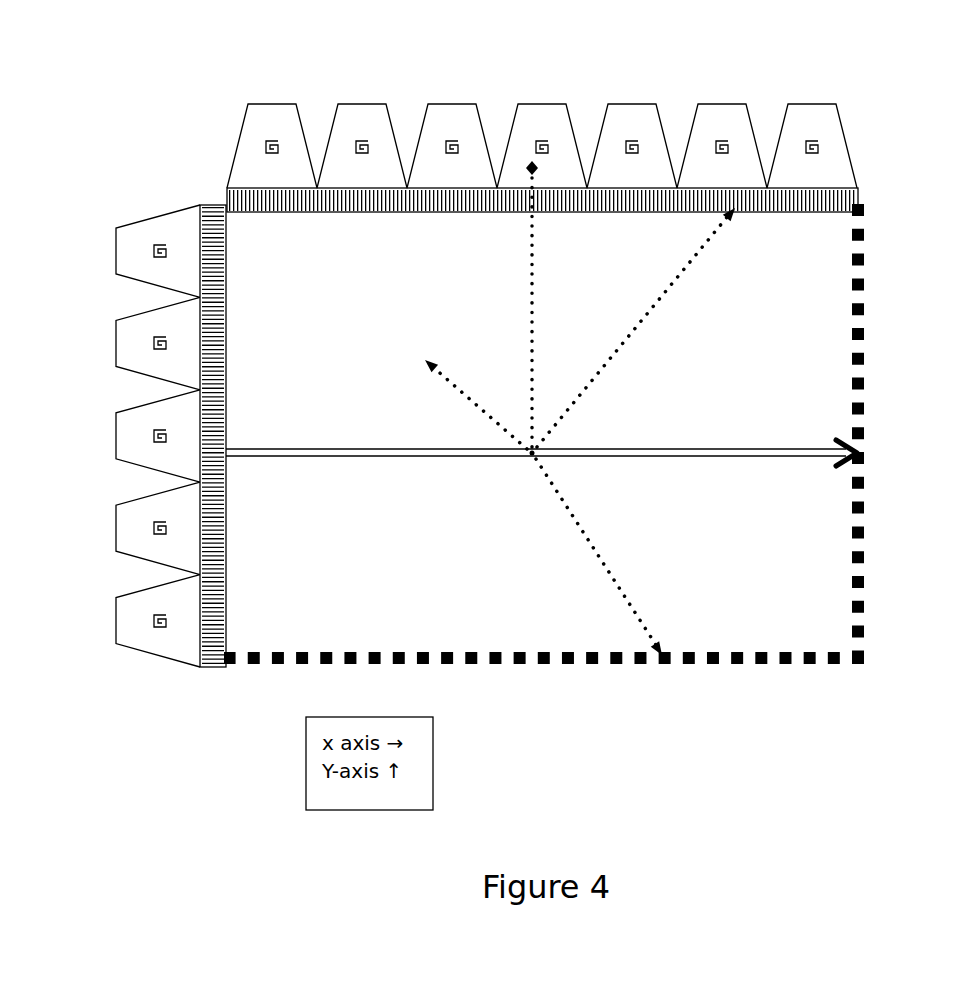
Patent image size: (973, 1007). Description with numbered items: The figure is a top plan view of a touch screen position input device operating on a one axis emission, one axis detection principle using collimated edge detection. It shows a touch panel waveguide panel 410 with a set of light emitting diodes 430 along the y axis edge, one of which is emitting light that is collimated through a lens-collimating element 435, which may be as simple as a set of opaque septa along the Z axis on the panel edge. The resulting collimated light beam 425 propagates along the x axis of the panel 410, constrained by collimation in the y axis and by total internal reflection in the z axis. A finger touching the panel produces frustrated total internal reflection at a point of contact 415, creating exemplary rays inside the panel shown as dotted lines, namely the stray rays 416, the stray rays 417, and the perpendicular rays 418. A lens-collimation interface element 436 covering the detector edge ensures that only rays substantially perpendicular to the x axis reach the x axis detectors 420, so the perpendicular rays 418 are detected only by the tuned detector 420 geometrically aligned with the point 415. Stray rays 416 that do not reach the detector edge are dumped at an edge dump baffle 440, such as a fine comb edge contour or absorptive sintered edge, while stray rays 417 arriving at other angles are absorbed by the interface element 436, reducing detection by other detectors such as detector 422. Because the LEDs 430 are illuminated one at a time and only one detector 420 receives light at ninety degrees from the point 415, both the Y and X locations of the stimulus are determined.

The touch panel waveguide panel 410 is at (497, 609).
The point of contact 415 is at (532, 460).
The stray FTIR rays 416 is at (588, 535).
The stray FTIR rays 417 is at (665, 293).
The perpendicular FTIR rays 418 is at (532, 238).
The x axis detector 420 is at (542, 107).
The detector 422 is at (735, 103).
The collimated light beam 425 is at (297, 447).
The light emitting diode 430 is at (115, 429).
The lens-collimating element 435 is at (212, 205).
The lens-collimation interface element 436 is at (860, 194).
The edge dump baffle 440 is at (866, 555).